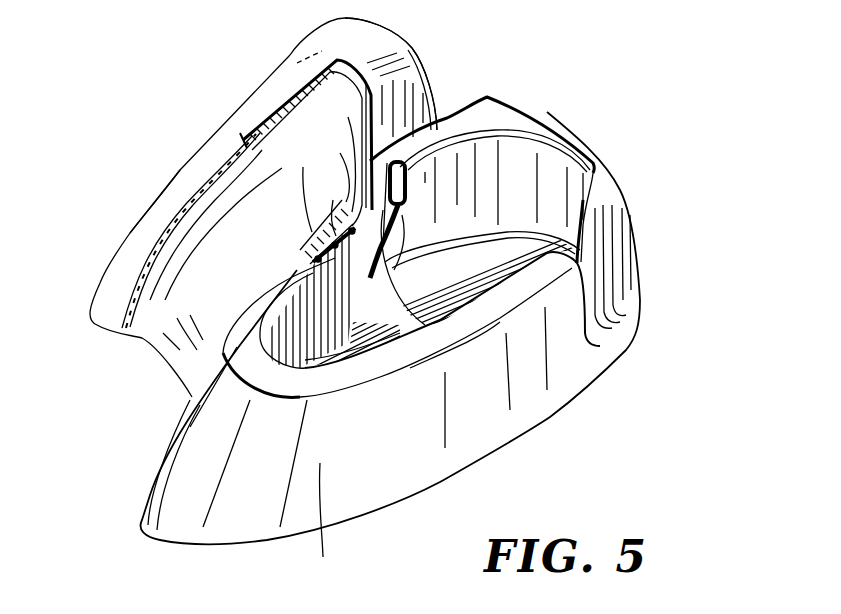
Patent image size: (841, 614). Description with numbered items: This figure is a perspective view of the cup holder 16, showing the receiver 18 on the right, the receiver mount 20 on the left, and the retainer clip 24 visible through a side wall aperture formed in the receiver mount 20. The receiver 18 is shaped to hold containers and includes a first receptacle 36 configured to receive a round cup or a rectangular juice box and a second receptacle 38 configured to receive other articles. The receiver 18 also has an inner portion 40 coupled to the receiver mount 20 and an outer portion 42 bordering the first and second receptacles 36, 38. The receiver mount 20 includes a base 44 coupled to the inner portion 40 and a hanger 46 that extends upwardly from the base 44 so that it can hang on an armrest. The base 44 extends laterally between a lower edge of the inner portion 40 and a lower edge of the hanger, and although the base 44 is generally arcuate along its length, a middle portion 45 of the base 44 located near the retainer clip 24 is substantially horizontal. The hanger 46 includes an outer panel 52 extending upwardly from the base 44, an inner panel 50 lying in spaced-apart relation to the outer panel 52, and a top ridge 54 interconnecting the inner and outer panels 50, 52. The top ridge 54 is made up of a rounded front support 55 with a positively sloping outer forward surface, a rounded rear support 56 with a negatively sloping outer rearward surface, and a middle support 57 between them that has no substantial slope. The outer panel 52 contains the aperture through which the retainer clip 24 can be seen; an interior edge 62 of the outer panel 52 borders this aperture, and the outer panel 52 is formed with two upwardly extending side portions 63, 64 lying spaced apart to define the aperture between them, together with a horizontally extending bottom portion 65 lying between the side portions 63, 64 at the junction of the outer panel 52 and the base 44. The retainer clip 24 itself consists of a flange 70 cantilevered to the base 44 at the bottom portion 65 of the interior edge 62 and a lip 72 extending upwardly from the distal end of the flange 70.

The cup holder 16 is at (575, 94).
The receiver 18 is at (650, 336).
The receiver mount 20 is at (428, 55).
The retainer clip 24 is at (334, 166).
The first receptacle 36 is at (549, 183).
The second receptacle 38 is at (290, 348).
The inner portion 40 is at (363, 245).
The outer portion 42 is at (340, 514).
The base 44 is at (362, 212).
The middle portion 45 is at (290, 258).
The hanger 46 is at (126, 230).
The inner panel 50 is at (253, 123).
The outer panel 52 is at (432, 84).
The top ridge 54 is at (323, 50).
The front support 55 is at (128, 270).
The rear support 56 is at (374, 42).
The middle support 57 is at (233, 147).
The interior edge 62 is at (352, 70).
The side portion 63 is at (238, 242).
The side portion 64 is at (417, 93).
The bottom portion 65 is at (336, 158).
The flange 70 is at (240, 222).
The lip 72 is at (347, 173).